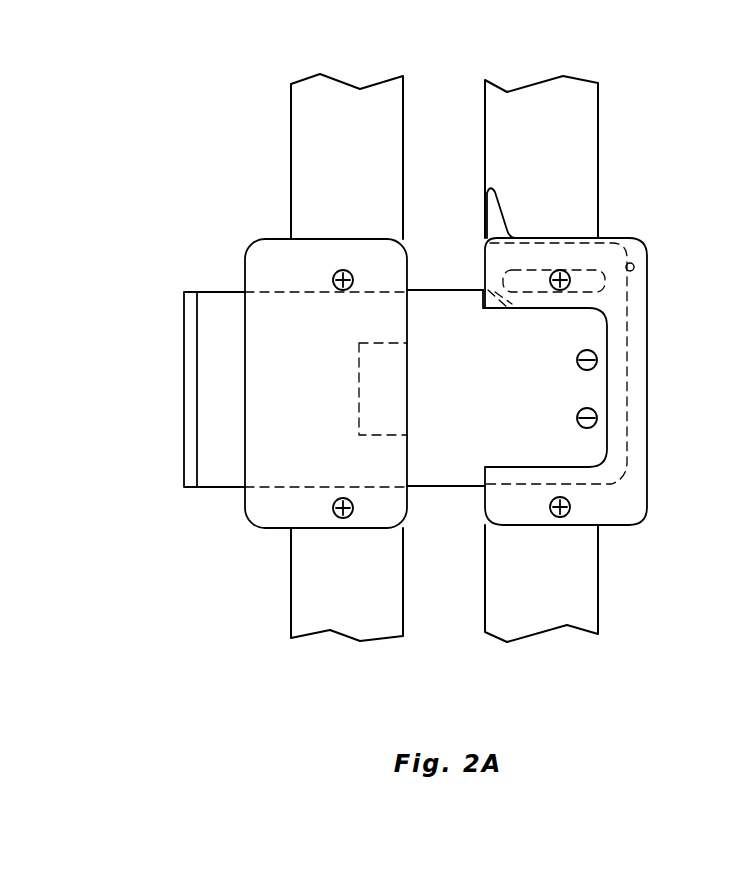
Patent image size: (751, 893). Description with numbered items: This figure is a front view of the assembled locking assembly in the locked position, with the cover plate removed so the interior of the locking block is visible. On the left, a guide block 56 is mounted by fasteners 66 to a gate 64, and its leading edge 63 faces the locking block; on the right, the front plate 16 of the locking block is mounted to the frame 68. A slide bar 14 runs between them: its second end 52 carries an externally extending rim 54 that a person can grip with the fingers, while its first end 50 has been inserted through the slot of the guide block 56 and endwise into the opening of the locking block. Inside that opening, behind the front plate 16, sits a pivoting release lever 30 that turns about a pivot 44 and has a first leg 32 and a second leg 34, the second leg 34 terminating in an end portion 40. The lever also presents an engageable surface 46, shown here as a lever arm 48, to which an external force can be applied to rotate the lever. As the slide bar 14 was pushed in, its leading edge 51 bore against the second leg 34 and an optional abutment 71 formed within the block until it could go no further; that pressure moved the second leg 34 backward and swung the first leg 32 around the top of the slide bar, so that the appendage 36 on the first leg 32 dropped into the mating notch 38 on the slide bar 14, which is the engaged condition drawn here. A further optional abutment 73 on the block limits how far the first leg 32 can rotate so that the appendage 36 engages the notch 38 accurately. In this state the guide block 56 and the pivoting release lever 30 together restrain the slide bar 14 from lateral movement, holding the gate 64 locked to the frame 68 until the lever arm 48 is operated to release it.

The slide bar 14 is at (437, 308).
The front plate 16 is at (615, 512).
The pivoting release lever 30 is at (640, 287).
The first leg 32 is at (568, 282).
The second leg 34 is at (632, 350).
The appendage 36 is at (497, 305).
The notch 38 is at (500, 310).
The end portion 40 is at (633, 370).
The pivot 44 is at (634, 264).
The engageable surface 46 is at (500, 178).
The lever arm 48 is at (500, 210).
The first end 50 is at (638, 400).
The leading edge 51 is at (640, 418).
The second end 52 is at (168, 391).
The externally extending rim 54 is at (185, 467).
The guide block 56 is at (260, 250).
The leading edge 63 is at (407, 467).
The gate 64 is at (353, 102).
The fasteners 66 is at (343, 291).
The frame 68 is at (582, 133).
The abutment 71 is at (612, 463).
The abutment 73 is at (592, 292).